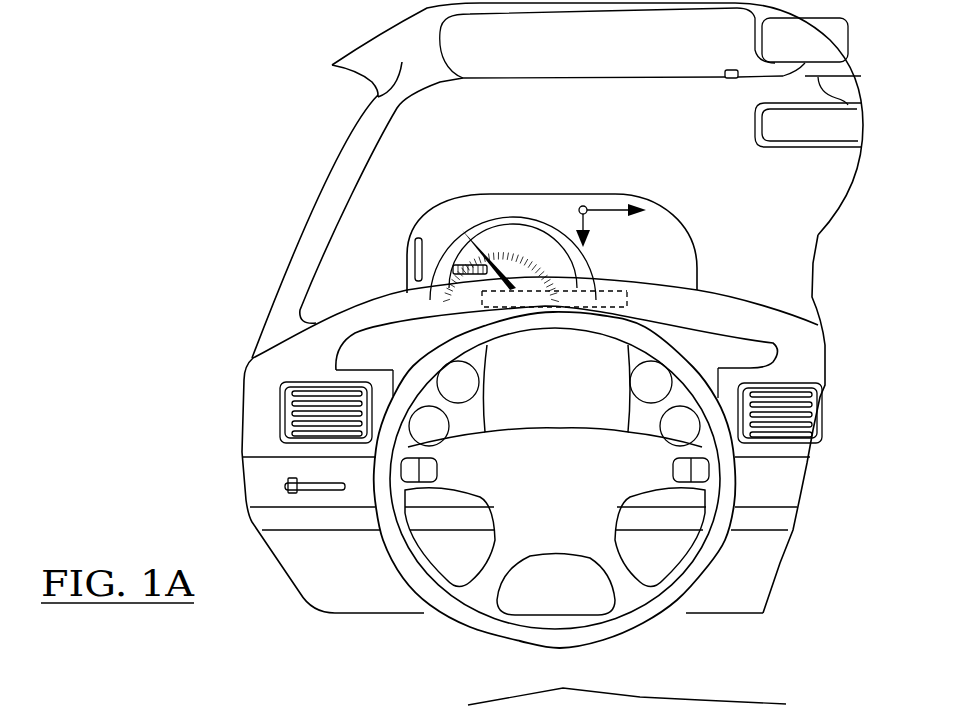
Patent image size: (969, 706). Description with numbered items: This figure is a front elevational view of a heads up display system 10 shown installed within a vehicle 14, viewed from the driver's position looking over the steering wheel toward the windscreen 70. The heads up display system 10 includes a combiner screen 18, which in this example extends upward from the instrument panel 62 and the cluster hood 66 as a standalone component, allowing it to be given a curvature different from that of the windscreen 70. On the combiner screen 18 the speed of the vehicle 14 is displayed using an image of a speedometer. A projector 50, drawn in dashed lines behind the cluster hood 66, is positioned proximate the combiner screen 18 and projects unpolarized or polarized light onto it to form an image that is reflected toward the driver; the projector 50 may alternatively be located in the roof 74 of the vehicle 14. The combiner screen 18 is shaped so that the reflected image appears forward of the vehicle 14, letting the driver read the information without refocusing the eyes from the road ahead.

The heads up display system 10 is at (708, 191).
The vehicle 14 is at (241, 133).
The combiner screen 18 is at (593, 194).
The projector 50 is at (627, 293).
The instrument panel 62 is at (348, 300).
The cluster hood 66 is at (716, 292).
The windscreen 70 is at (792, 213).
The roof 74 is at (378, 97).